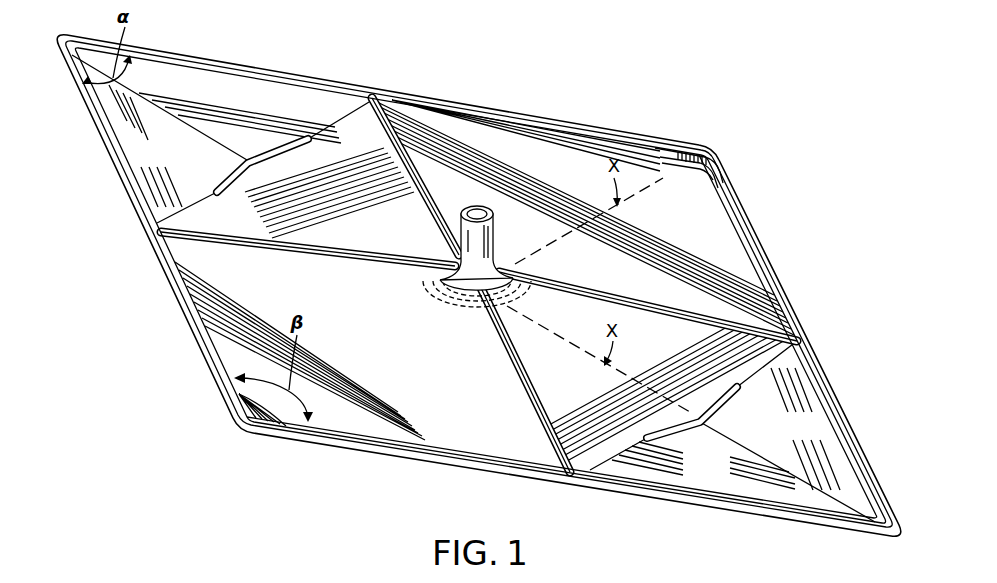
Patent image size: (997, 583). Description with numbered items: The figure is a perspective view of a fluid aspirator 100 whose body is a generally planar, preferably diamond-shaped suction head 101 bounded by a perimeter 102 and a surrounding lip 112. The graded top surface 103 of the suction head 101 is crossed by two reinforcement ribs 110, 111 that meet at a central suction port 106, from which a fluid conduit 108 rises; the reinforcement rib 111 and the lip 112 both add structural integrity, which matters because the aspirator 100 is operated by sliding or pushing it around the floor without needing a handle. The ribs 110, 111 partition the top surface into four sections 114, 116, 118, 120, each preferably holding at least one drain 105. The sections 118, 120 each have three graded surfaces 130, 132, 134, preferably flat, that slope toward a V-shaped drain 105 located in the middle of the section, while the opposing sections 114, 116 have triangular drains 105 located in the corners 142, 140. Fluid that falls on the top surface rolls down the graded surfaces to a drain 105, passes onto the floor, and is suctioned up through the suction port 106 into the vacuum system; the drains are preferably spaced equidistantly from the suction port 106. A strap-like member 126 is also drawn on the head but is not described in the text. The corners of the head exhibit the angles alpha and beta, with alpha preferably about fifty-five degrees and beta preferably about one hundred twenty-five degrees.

The fluid aspirator 100 is at (633, 73).
The suction head 101 is at (724, 244).
The perimeter 102 is at (313, 434).
The top surface 103 is at (220, 346).
The drain 105 is at (291, 141).
The suction port 106 is at (496, 235).
The fluid conduit 108 is at (485, 191).
The reinforcement rib 110 is at (391, 256).
The reinforcement rib 111 is at (431, 172).
The lip 112 is at (740, 506).
The section 114 is at (346, 361).
The section 116 is at (646, 253).
The section 118 is at (215, 121).
The section 120 is at (581, 421).
The strap 126 is at (227, 175).
The graded surface 130 is at (315, 201).
The graded surface 132 is at (141, 163).
The graded surface 134 is at (688, 474).
The corner 140 is at (266, 434).
The corner 142 is at (705, 148).